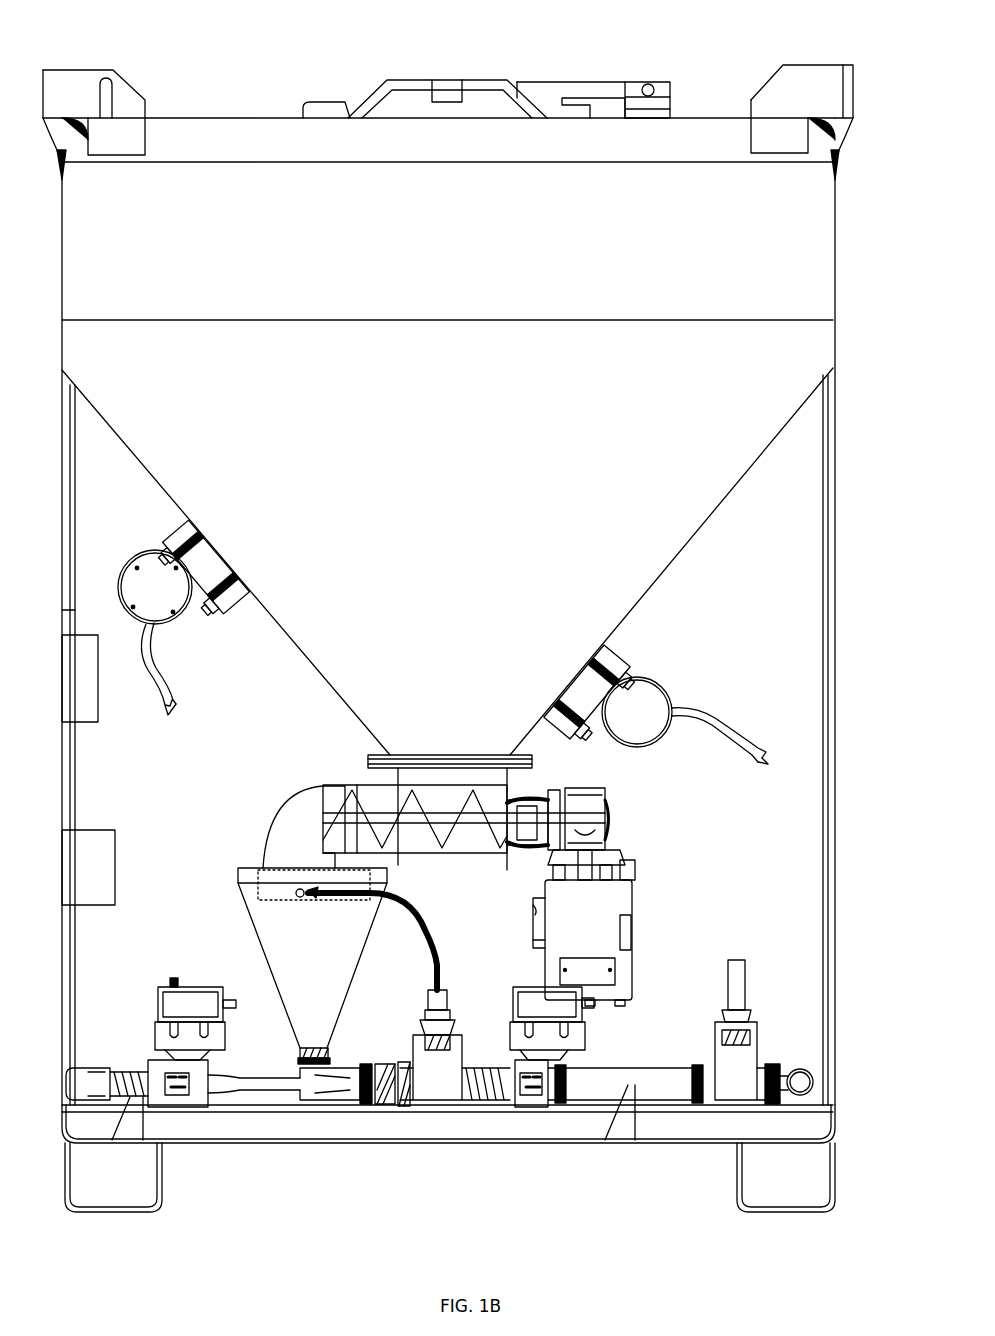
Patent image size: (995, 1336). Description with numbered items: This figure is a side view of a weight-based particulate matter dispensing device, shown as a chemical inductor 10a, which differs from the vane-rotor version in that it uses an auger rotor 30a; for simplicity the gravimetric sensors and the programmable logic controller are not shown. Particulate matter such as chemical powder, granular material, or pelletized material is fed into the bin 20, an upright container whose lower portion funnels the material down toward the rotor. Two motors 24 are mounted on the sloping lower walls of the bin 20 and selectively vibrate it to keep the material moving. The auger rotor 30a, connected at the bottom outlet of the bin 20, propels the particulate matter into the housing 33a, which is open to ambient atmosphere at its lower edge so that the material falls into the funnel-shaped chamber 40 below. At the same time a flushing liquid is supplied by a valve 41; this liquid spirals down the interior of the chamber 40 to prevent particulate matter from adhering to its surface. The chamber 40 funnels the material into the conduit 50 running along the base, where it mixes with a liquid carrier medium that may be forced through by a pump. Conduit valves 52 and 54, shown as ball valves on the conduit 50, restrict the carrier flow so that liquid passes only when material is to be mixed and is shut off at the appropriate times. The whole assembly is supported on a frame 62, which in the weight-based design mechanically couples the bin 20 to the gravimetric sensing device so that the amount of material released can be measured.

The inductor 10a is at (99, 58).
The bin 20 is at (800, 354).
The motors 24 is at (160, 572).
The auger rotor 30a is at (452, 860).
The housing 33a is at (283, 818).
The chamber 40 is at (262, 958).
The valve 41 is at (305, 898).
The conduit 50 is at (328, 1098).
The conduit valve 52 is at (535, 1098).
The conduit valve 54 is at (180, 1102).
The frame 62 is at (823, 795).